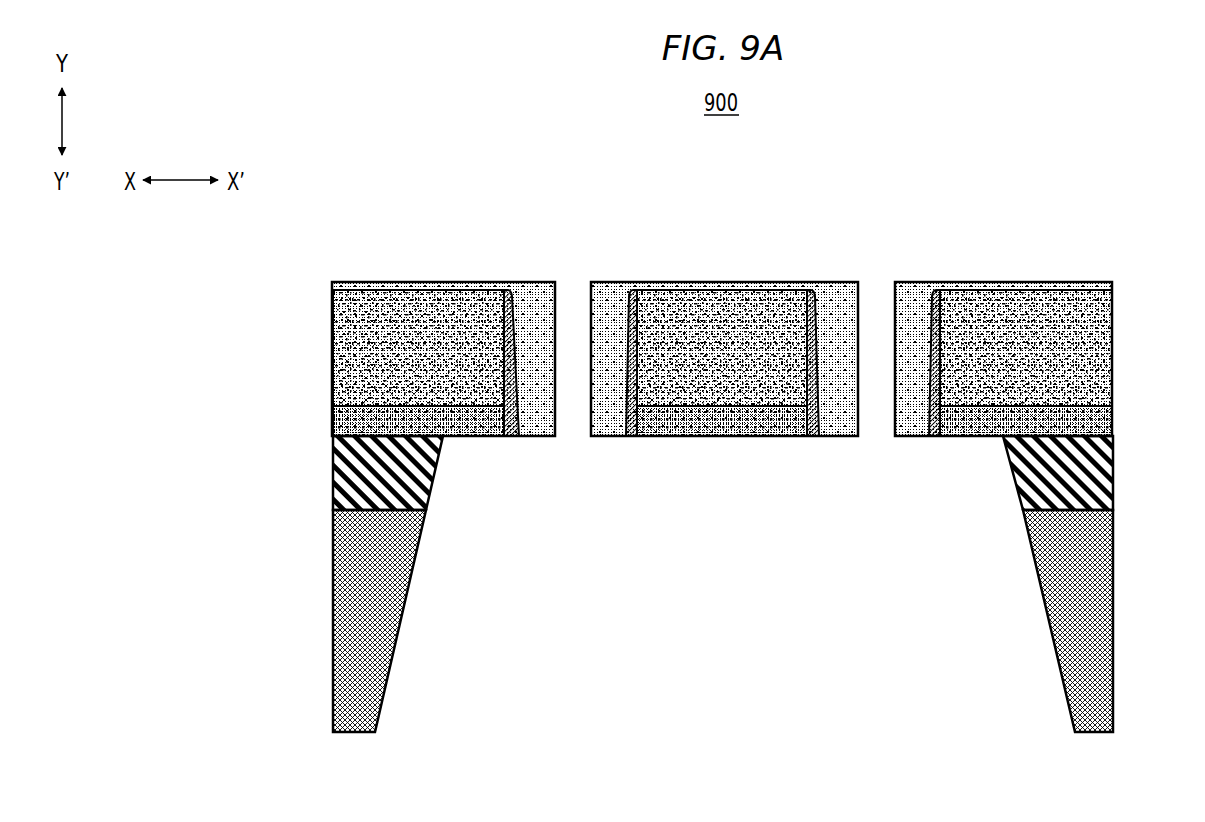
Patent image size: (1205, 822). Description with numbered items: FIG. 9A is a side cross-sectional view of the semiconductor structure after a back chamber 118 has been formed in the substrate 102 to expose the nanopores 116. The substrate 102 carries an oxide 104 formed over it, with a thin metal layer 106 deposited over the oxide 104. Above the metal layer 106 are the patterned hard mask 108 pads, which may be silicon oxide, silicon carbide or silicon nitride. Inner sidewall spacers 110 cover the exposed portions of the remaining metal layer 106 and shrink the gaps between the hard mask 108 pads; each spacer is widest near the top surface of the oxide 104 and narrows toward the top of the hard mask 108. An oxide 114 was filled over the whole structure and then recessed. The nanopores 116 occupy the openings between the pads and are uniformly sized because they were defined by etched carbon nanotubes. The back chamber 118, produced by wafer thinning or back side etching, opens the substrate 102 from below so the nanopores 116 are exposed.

The substrate 102 is at (1113, 615).
The oxide 104 is at (1113, 468).
The metal layer 106 is at (1113, 422).
The hard mask 108 is at (333, 347).
The inner sidewall spacers 110 is at (511, 316).
The oxide 114 is at (1052, 282).
The nanopores 116 is at (879, 287).
The back chamber 118 is at (720, 697).